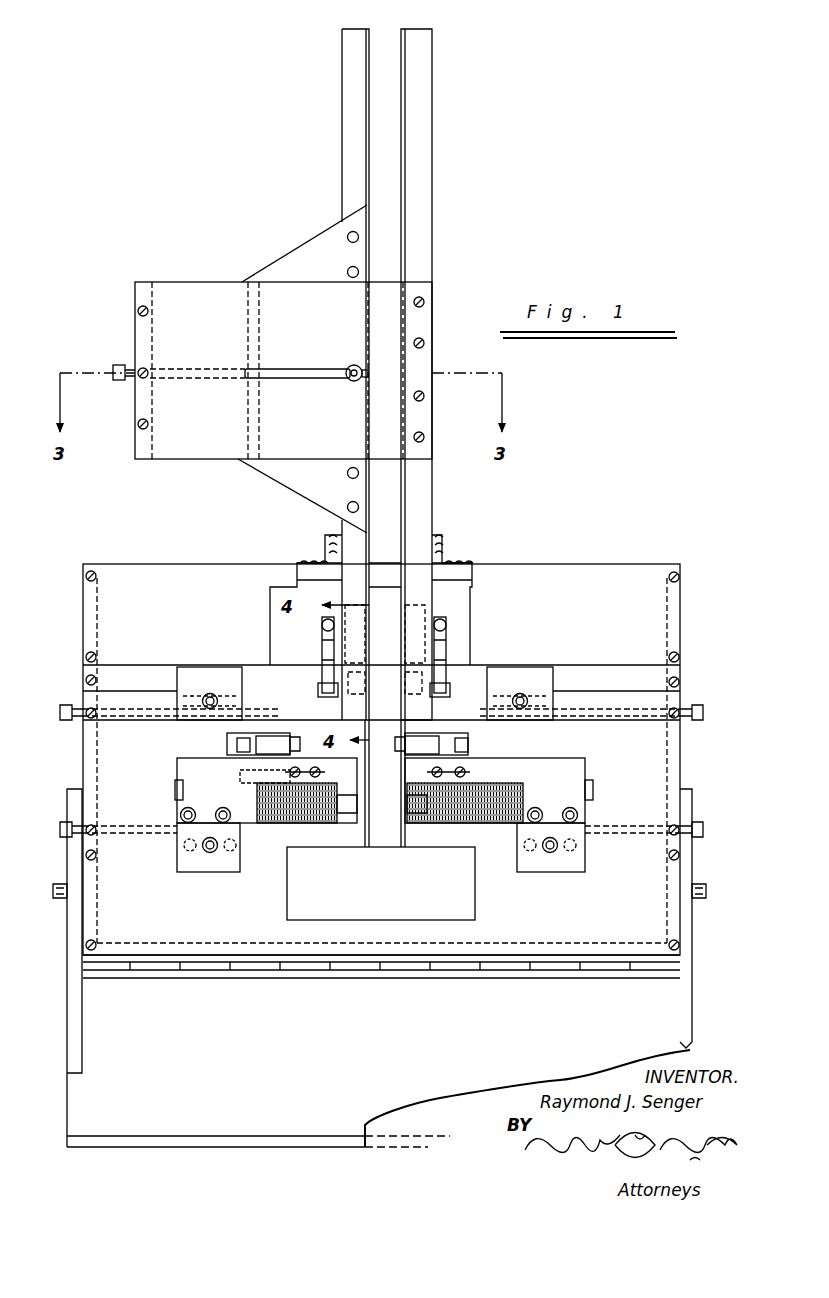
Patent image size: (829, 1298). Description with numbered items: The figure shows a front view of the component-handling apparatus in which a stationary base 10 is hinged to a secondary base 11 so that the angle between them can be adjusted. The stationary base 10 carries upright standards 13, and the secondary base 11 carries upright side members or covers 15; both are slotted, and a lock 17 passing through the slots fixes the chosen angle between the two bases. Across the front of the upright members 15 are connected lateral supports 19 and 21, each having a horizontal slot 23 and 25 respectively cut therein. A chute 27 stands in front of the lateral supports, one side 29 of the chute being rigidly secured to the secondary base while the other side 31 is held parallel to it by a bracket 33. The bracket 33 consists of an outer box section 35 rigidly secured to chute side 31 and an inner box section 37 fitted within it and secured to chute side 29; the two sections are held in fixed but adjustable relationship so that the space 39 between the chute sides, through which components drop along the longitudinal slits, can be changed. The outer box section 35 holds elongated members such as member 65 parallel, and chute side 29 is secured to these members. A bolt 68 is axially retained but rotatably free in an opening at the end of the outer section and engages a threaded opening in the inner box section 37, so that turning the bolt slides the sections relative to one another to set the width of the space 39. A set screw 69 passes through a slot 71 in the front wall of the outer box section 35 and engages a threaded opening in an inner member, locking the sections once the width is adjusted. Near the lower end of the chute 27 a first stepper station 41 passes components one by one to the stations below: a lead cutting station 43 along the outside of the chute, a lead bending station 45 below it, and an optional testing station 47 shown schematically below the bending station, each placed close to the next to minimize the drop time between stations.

The stationary base 10 is at (217, 1148).
The secondary base 11 is at (230, 943).
The upright standards 13 is at (67, 980).
The upright side members or covers 15 is at (83, 626).
The lock 17 is at (53, 891).
The lateral support 19 is at (588, 665).
The lateral support 21 is at (603, 830).
The horizontal slot 23 is at (343, 92).
The horizontal slot 25 is at (122, 842).
The chute 27 is at (316, 353).
The chute side 29 is at (367, 178).
The chute side 31 is at (405, 170).
The bracket 33 is at (272, 258).
The outer box section 35 is at (392, 282).
The inner box section 37 is at (259, 325).
The space 39 is at (383, 92).
The first stepper station 41 is at (323, 667).
The lead cutting station 43 is at (283, 733).
The lead bending station 45 is at (407, 802).
The testing station 47 is at (482, 893).
The elongated member 65 is at (432, 75).
The bolt 68 is at (118, 365).
The set screw 69 is at (354, 365).
The slot 71 is at (297, 369).